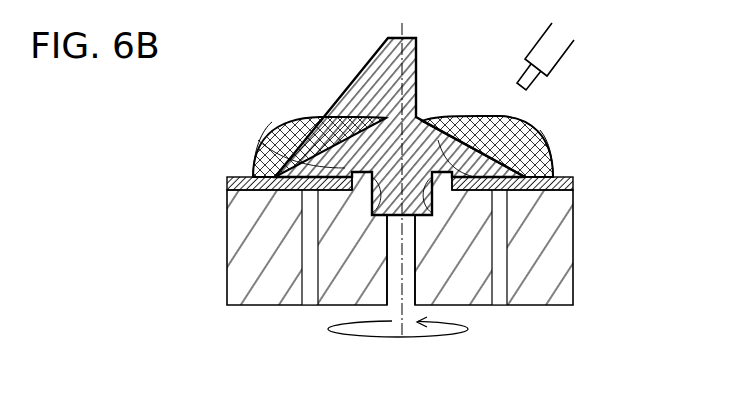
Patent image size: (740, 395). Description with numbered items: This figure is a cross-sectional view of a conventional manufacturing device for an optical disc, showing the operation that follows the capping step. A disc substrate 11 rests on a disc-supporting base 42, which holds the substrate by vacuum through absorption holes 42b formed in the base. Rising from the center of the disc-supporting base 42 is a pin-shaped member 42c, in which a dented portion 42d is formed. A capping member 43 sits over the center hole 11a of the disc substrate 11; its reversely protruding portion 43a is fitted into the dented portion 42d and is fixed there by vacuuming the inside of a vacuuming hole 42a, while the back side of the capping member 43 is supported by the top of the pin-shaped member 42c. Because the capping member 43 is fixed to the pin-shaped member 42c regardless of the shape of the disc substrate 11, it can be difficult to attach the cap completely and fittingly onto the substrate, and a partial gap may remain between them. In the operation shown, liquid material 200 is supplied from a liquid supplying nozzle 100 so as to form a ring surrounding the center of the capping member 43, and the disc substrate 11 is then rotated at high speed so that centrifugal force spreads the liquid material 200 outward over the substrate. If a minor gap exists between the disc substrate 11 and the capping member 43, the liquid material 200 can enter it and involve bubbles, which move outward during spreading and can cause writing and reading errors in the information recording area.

The disc substrate 11 is at (576, 185).
The center hole 11a is at (264, 142).
The disc-supporting base 42 is at (576, 244).
The vacuuming hole 42a is at (403, 294).
The absorption holes 42b is at (502, 307).
The pin-shaped member 42c is at (466, 140).
The dented portion 42d is at (553, 152).
The capping member 43 is at (366, 88).
The reversely protruding portion 43a is at (315, 118).
The liquid supplying nozzle 100 is at (567, 53).
The liquid material 200 is at (546, 127).